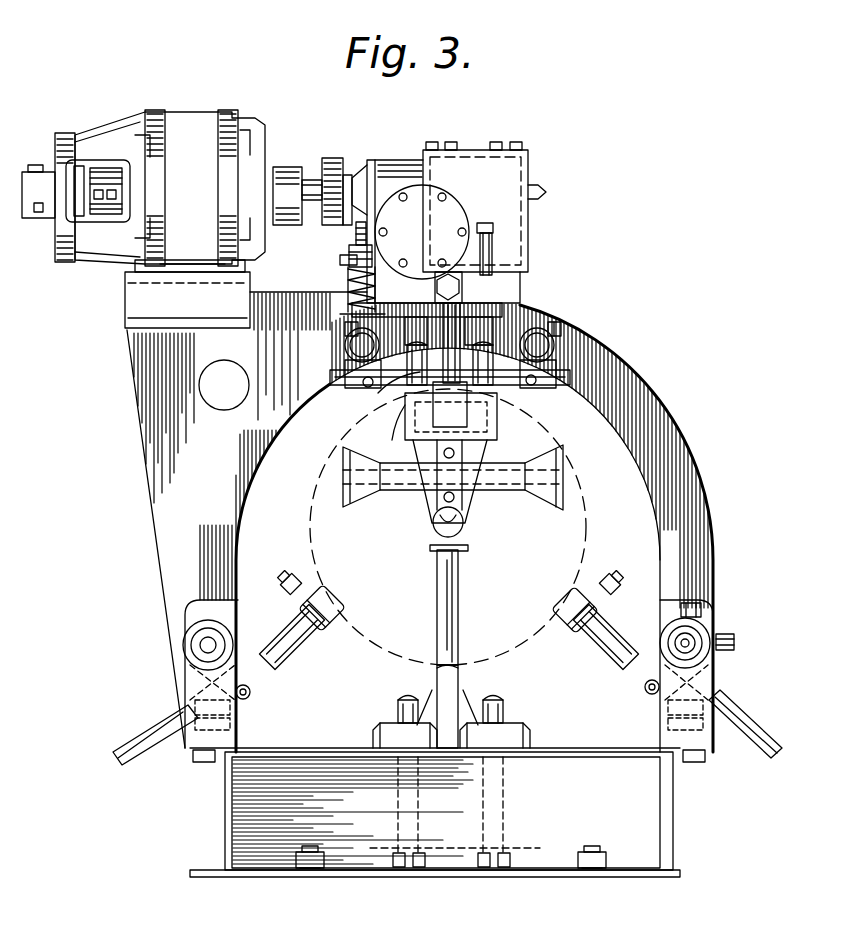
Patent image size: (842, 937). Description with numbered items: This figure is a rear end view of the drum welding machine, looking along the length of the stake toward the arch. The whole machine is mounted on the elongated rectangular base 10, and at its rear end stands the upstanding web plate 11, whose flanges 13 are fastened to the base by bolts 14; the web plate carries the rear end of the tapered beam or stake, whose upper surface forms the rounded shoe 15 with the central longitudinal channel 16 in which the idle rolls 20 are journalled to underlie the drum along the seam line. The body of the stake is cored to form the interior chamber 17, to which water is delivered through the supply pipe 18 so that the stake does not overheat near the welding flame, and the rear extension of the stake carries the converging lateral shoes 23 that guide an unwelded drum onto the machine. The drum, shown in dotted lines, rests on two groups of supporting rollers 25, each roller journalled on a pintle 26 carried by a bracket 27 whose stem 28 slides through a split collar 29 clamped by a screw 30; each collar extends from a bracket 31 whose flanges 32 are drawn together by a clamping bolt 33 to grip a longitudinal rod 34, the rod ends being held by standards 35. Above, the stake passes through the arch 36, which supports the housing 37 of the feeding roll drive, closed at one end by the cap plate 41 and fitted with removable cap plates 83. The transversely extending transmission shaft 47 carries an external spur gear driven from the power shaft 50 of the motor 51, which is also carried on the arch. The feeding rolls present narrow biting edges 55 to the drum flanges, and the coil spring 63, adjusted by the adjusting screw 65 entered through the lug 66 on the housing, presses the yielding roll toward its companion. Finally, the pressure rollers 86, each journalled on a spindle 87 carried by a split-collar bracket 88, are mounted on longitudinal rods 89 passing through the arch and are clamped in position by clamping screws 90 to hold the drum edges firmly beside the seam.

The base 10 is at (435, 812).
The web plate 11 is at (459, 682).
The flanges 13 is at (380, 738).
The bolts 14 is at (398, 702).
The rounded shoe 15 is at (395, 430).
The channel 16 is at (497, 420).
The interior chamber 17 is at (425, 455).
The supply pipe 18 is at (458, 598).
The idle rolls 20 is at (458, 402).
The lateral shoes 23 is at (350, 475).
The supporting rollers 25 is at (312, 622).
The pintle 26 is at (287, 578).
The bracket 27 is at (280, 610).
The stem 28 is at (262, 670).
The split collar 29 is at (250, 695).
The screw 30 is at (240, 705).
The bracket 31 is at (700, 628).
The flanges 32 is at (700, 610).
The clamping bolt 33 is at (715, 648).
The rod 34 is at (710, 672).
The standards 35 is at (718, 740).
The arch 36 is at (685, 430).
The housing 37 is at (405, 160).
The cap plate 41 is at (422, 232).
The transmission shaft 47 is at (335, 162).
The power shaft 50 is at (310, 185).
The motor 51 is at (162, 219).
The biting edge 55 is at (388, 397).
The coil spring 63 is at (348, 278).
The adjusting screw 65 is at (355, 234).
The lug 66 is at (349, 255).
The cap plates 83 is at (470, 150).
The pressure rollers 86 is at (414, 348).
The spindle 87 is at (345, 385).
The bracket 88 is at (345, 368).
The rods 89 is at (345, 345).
The clamping screws 90 is at (345, 328).